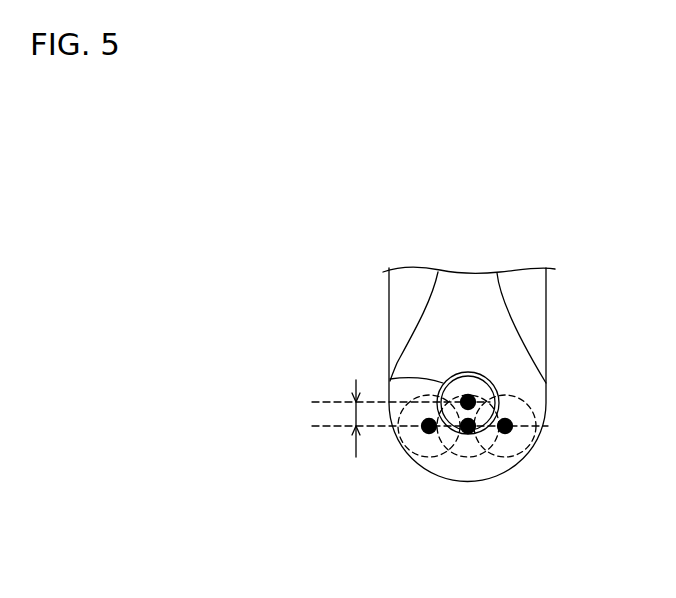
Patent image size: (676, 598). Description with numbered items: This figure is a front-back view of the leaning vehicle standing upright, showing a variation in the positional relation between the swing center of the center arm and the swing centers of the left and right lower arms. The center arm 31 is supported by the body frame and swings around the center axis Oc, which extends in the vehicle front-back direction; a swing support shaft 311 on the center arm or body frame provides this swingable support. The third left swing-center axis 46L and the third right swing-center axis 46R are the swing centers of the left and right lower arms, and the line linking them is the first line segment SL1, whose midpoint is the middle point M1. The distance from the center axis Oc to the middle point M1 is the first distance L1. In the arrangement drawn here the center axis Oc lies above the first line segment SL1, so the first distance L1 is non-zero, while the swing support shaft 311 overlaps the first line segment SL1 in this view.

The center arm 31 is at (524, 372).
The swing support shaft 311 is at (390, 379).
The center axis Oc is at (470, 396).
The middle point M1 is at (467, 434).
The first line segment SL1 is at (475, 433).
The third left swing-center axis 46L is at (423, 427).
The third right swing-center axis 46R is at (512, 429).
The first distance L1 is at (430, 421).